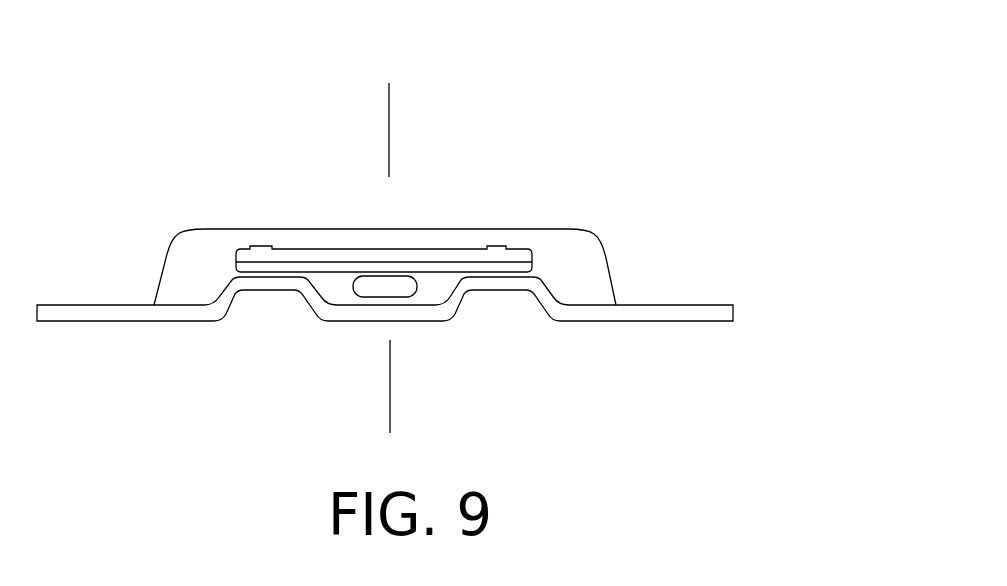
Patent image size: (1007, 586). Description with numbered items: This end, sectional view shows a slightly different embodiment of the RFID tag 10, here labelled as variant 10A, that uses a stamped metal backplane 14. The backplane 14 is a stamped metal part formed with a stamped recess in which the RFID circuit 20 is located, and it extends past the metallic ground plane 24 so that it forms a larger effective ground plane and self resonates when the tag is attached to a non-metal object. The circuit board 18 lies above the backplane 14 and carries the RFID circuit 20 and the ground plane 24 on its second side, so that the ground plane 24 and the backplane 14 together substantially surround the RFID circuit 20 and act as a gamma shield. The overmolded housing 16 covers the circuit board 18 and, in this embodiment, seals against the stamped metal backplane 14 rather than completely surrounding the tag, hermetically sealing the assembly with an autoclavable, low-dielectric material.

The RFID tag 10 is at (353, 100).
The assembly 10A is at (581, 69).
The backplane 14 is at (689, 337).
The overmolded housing 16 is at (569, 217).
The circuit board 18 is at (333, 257).
The RFID circuit 20 is at (368, 298).
The metallic ground plane 24 is at (427, 277).